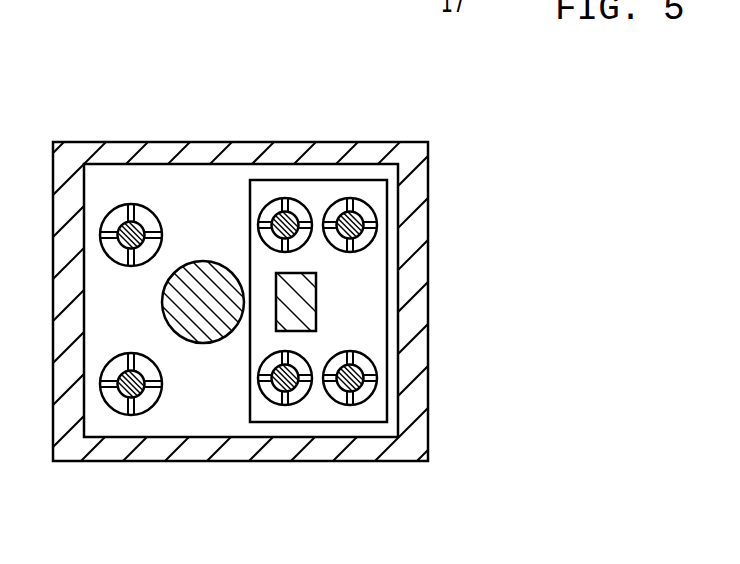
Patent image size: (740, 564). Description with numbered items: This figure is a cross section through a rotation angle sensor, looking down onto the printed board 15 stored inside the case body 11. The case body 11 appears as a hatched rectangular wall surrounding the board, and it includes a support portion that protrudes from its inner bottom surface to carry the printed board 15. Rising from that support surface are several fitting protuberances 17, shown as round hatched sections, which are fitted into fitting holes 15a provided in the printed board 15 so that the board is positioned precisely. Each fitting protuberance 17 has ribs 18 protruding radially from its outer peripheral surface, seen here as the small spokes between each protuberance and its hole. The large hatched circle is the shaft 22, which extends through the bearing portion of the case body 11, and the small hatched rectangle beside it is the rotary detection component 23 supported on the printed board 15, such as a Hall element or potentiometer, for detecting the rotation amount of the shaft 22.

The case body 11 is at (420, 318).
The printed board 15 is at (367, 342).
The fitting holes 15a is at (332, 200).
The fitting protuberances 17 is at (275, 200).
The ribs 18 is at (350, 203).
The shaft 22 is at (192, 325).
The rotary detection component 23 is at (303, 300).